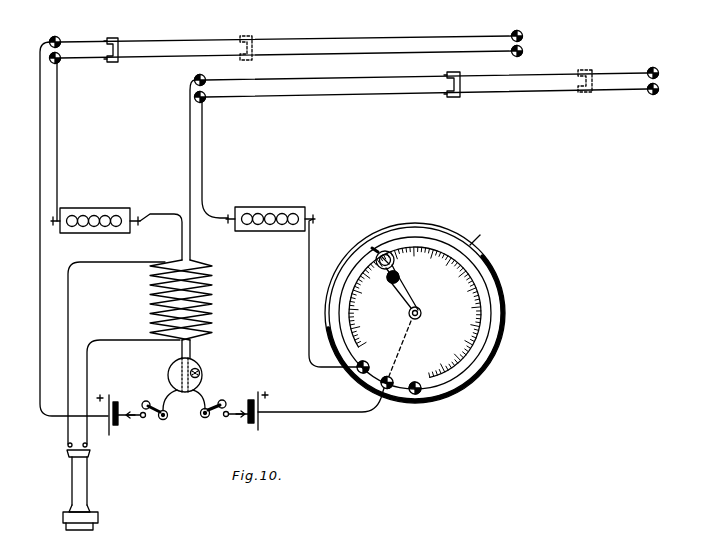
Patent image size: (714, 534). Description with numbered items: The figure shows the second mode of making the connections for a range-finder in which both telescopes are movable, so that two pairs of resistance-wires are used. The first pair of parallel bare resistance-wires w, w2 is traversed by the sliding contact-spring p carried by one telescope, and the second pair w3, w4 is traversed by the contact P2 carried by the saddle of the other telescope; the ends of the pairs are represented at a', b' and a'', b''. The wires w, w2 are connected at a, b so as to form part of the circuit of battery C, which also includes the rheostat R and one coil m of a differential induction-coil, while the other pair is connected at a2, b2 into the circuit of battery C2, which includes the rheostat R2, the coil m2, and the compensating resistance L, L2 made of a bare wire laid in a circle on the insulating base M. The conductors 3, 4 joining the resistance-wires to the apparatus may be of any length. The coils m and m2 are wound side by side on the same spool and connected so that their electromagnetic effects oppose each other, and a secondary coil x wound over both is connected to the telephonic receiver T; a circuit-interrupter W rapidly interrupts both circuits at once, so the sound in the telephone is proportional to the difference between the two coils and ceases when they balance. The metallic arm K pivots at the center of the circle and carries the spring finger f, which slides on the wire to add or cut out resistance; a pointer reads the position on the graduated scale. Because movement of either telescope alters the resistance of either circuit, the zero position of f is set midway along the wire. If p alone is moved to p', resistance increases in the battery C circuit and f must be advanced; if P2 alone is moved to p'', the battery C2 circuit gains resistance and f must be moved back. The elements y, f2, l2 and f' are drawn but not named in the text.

The resistance-wire w3 is at (285, 33).
The resistance-wire w4 is at (285, 60).
The resistance-wire w is at (426, 70).
The resistance-wire w2 is at (426, 96).
The sliding contact-spring p is at (112, 58).
The moved position of contact p p' is at (254, 53).
The contact P2 is at (456, 92).
The moved position of contact p2 p'' is at (591, 89).
The connection point a2 is at (62, 36).
The connection point b2 is at (63, 64).
The connection point a is at (205, 75).
The connection point b is at (204, 103).
The terminal a'' is at (526, 32).
The terminal b'' is at (526, 51).
The terminal a' is at (660, 69).
The terminal b' is at (660, 89).
The conductor 3 is at (69, 229).
The conductor 4 is at (61, 142).
The rheostat R is at (95, 212).
The rheostat R2 is at (270, 211).
The coil m is at (150, 305).
The coil m2 is at (212, 291).
The secondary coil x is at (212, 269).
The circuit-interrupter W is at (168, 375).
The needle y is at (200, 372).
The spring metal finger f is at (154, 416).
The switch f2 is at (215, 416).
The battery C is at (118, 417).
The battery C2 is at (253, 415).
The telephonic receiver T is at (82, 486).
The base M is at (506, 310).
The metallic arm K is at (398, 285).
The end of variable resistance-wire L is at (367, 362).
The terminal l2 is at (414, 381).
The intermediate point of variable resistance-wire L2 is at (481, 234).
The stop f' is at (372, 233).